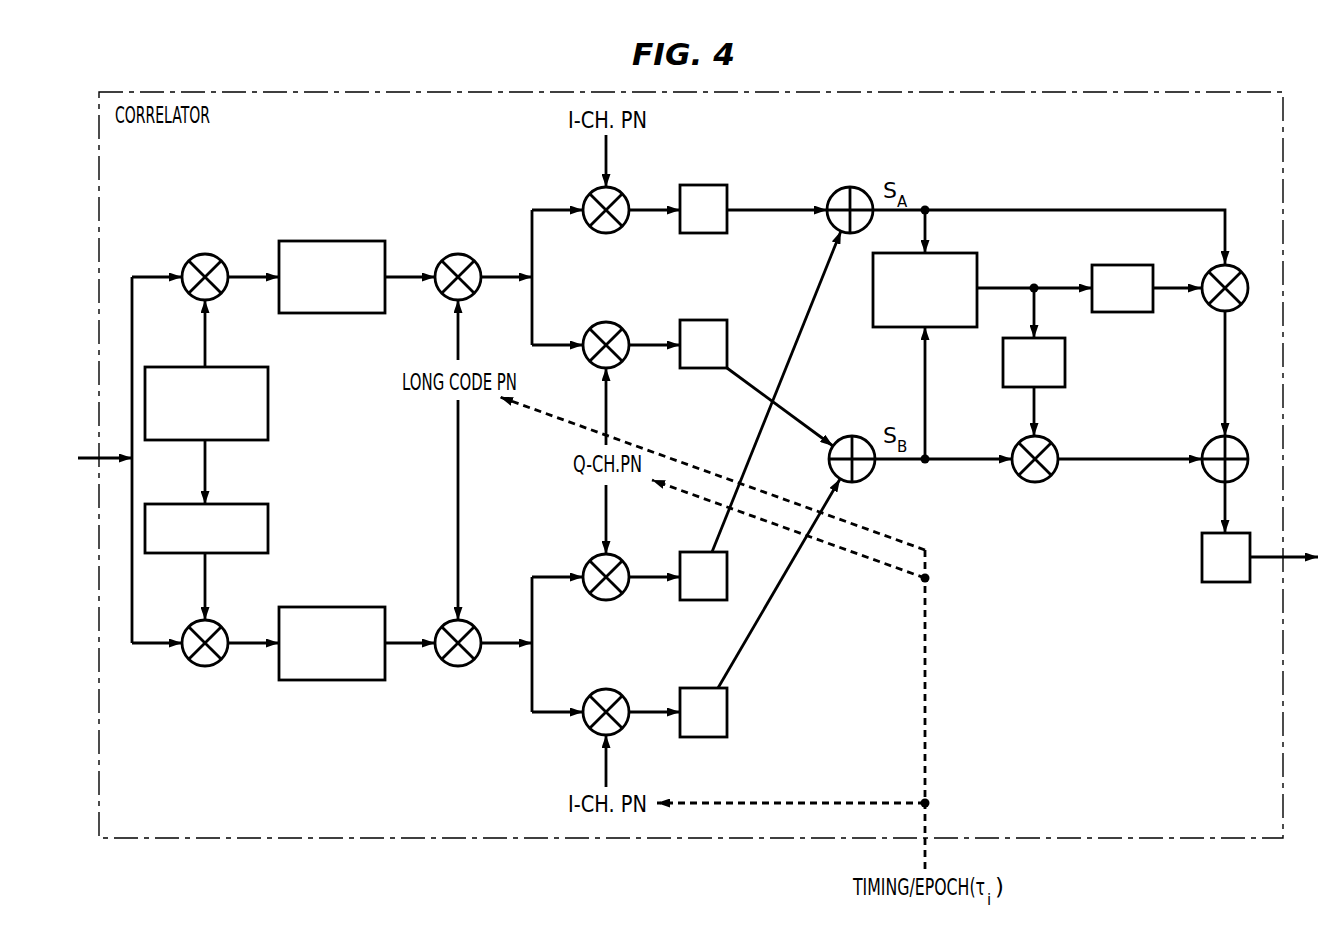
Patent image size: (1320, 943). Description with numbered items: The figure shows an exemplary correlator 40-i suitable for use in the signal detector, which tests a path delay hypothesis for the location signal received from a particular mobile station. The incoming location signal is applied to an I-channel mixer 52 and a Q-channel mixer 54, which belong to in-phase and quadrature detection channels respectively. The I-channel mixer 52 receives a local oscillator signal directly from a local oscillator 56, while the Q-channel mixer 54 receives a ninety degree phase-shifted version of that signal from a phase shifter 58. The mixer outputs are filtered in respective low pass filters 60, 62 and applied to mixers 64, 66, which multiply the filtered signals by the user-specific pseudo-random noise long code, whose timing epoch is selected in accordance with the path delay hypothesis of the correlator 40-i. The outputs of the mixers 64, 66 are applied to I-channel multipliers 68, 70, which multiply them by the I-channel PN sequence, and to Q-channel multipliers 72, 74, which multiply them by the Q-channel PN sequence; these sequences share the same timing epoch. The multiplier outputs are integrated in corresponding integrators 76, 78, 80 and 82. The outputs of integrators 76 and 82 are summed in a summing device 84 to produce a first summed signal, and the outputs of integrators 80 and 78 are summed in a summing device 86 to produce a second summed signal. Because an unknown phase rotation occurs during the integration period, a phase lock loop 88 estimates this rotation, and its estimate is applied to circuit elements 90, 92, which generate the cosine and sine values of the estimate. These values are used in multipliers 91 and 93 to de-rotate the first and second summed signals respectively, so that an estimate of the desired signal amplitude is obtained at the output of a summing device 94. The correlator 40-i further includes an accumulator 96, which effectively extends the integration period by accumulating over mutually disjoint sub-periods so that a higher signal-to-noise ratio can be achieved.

The correlator 40-i is at (154, 92).
The I-channel mixer 52 is at (205, 254).
The Q-channel mixer 54 is at (205, 666).
The local oscillator 56 is at (233, 367).
The phase shifter 58 is at (268, 521).
The low pass filter 60 is at (331, 241).
The low pass filter 62 is at (326, 607).
The mixer 64 is at (458, 254).
The mixer 66 is at (458, 666).
The I-channel multiplier 68 is at (588, 200).
The I-channel multiplier 70 is at (588, 722).
The Q-channel multiplier 72 is at (607, 322).
The Q-channel multiplier 74 is at (606, 600).
The integrator 76 is at (703, 185).
The integrator 78 is at (705, 737).
The integrator 80 is at (705, 320).
The integrator 82 is at (705, 600).
The summing device 84 is at (845, 187).
The summing device 86 is at (848, 436).
The phase lock loop 88 is at (977, 268).
The circuit element 90 is at (1118, 312).
The multiplier 91 is at (1213, 313).
The circuit element 92 is at (1003, 378).
The multiplier 93 is at (1035, 482).
The summing device 94 is at (1212, 483).
The accumulator 96 is at (1230, 582).